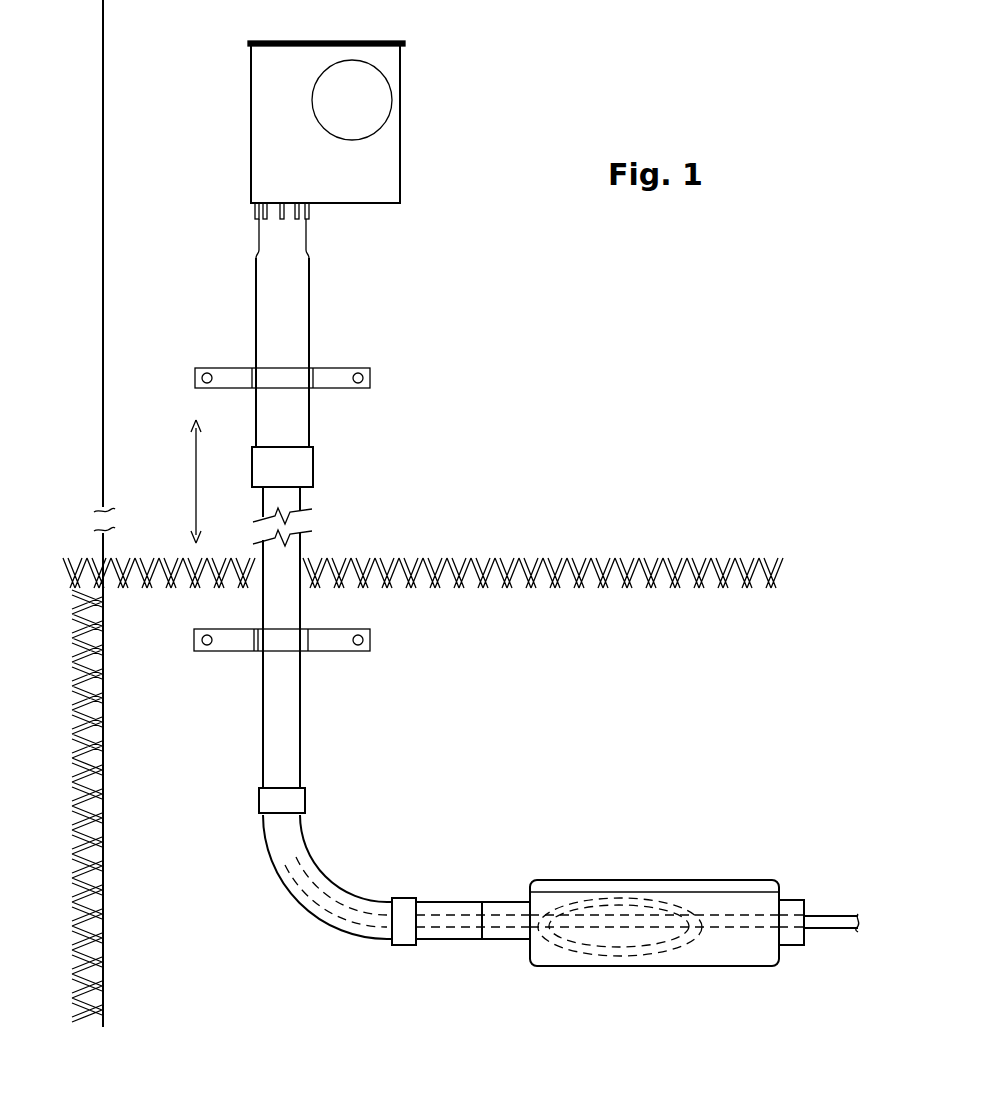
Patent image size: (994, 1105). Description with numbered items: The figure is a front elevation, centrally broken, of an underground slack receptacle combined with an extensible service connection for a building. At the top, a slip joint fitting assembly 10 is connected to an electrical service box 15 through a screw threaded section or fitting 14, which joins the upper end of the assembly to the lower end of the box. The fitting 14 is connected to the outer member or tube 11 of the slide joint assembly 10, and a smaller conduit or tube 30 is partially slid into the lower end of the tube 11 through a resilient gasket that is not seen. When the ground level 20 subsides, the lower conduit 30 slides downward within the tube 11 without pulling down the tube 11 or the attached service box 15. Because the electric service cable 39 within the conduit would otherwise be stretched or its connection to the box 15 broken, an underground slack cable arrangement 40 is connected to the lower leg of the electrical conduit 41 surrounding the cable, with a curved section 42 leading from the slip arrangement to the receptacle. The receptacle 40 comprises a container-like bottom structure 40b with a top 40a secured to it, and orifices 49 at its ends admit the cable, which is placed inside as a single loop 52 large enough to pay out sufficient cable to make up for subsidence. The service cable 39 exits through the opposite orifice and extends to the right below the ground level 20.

The slip joint fitting assembly 10 is at (337, 312).
The outer member or tube 11 is at (311, 251).
The screw threaded section or fitting 14 is at (312, 215).
The electrical service box 15 is at (360, 156).
The ground level 20 is at (527, 590).
The smaller conduit or tube 30 is at (291, 500).
The electric service cable 39 is at (841, 930).
The underground slack cable arrangement 40 is at (636, 902).
The top 40a is at (566, 880).
The container-like bottom structure 40b is at (627, 967).
The electrical conduit lower leg 41 is at (438, 934).
The curved section 42 is at (316, 870).
The orifices 49 is at (793, 900).
The single loop 52 is at (687, 911).